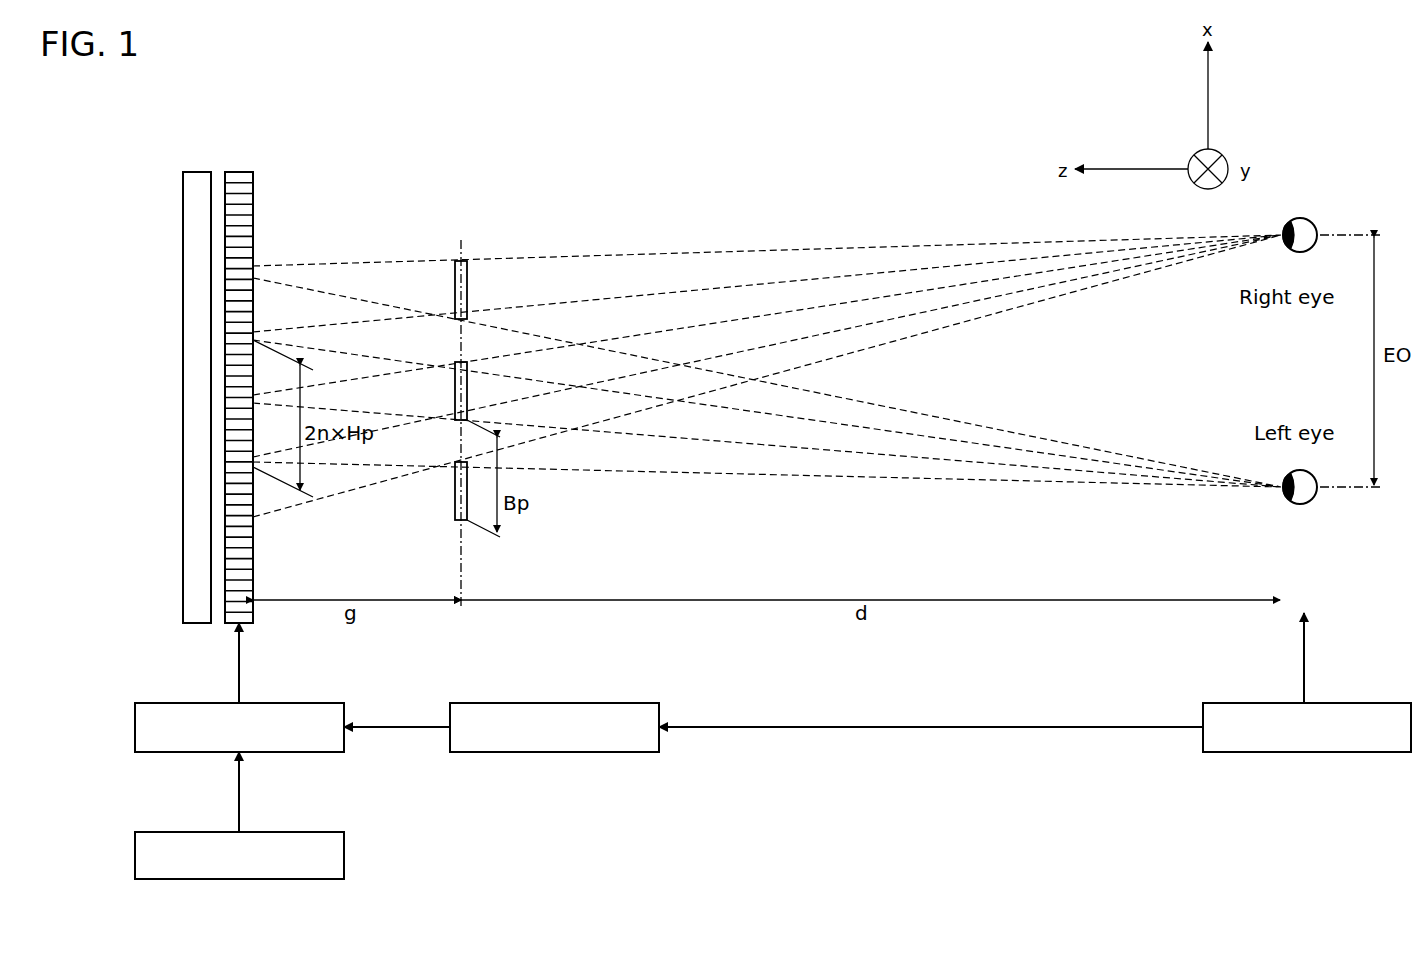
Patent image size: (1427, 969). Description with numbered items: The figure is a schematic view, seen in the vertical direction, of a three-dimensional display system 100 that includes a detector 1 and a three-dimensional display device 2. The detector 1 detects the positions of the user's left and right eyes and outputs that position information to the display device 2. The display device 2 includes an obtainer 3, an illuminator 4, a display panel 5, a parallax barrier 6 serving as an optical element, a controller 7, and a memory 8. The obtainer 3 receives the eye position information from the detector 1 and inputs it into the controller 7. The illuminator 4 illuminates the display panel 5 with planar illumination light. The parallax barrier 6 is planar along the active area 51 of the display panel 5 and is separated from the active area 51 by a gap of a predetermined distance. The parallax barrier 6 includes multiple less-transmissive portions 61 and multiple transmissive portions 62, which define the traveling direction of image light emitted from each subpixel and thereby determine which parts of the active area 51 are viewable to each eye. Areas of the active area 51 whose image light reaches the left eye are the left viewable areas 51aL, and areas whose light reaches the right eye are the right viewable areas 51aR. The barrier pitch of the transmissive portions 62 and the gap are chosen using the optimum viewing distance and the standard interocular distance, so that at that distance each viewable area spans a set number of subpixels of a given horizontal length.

The detector 1 is at (1306, 752).
The 3D display device 2 is at (163, 191).
The obtainer 3 is at (556, 703).
The illuminator 4 is at (197, 172).
The display panel 5 is at (240, 172).
The parallax barrier 6 is at (566, 178).
The controller 7 is at (196, 703).
The memory 8 is at (197, 832).
The active area 51 is at (250, 188).
The right viewable areas 51aR is at (162, 357).
The left viewable areas 51aL is at (162, 410).
The less-transmissive portions 61 is at (467, 288).
The transmissive portions 62 is at (465, 354).
The 3D display system 100 is at (805, 191).